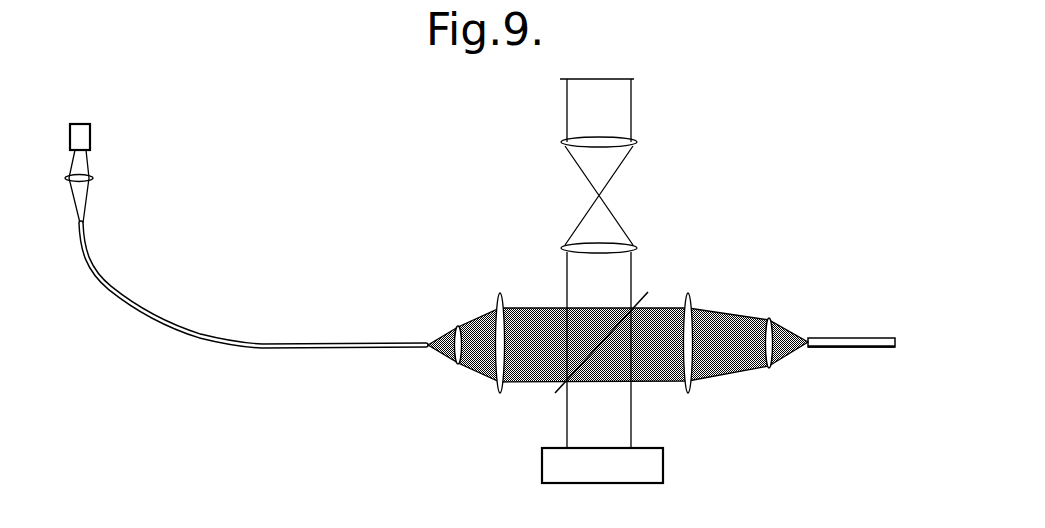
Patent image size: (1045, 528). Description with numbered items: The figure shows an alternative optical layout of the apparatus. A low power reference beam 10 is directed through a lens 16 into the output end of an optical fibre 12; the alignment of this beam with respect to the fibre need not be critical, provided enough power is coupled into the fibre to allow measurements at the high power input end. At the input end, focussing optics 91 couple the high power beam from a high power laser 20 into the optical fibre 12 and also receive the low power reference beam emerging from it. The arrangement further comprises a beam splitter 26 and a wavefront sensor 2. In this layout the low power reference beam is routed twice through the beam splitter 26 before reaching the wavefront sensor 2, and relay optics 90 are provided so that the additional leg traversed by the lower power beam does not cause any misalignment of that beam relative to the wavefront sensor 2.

The wavefront sensor 2 is at (665, 466).
The low power reference beam 10 is at (90, 134).
The optical fibre 12 is at (207, 333).
The lens 16 is at (93, 178).
The high power laser 20 is at (855, 332).
The beam splitter 26 is at (653, 285).
The relay optics 90 is at (655, 80).
The focussing optics 91 is at (508, 398).